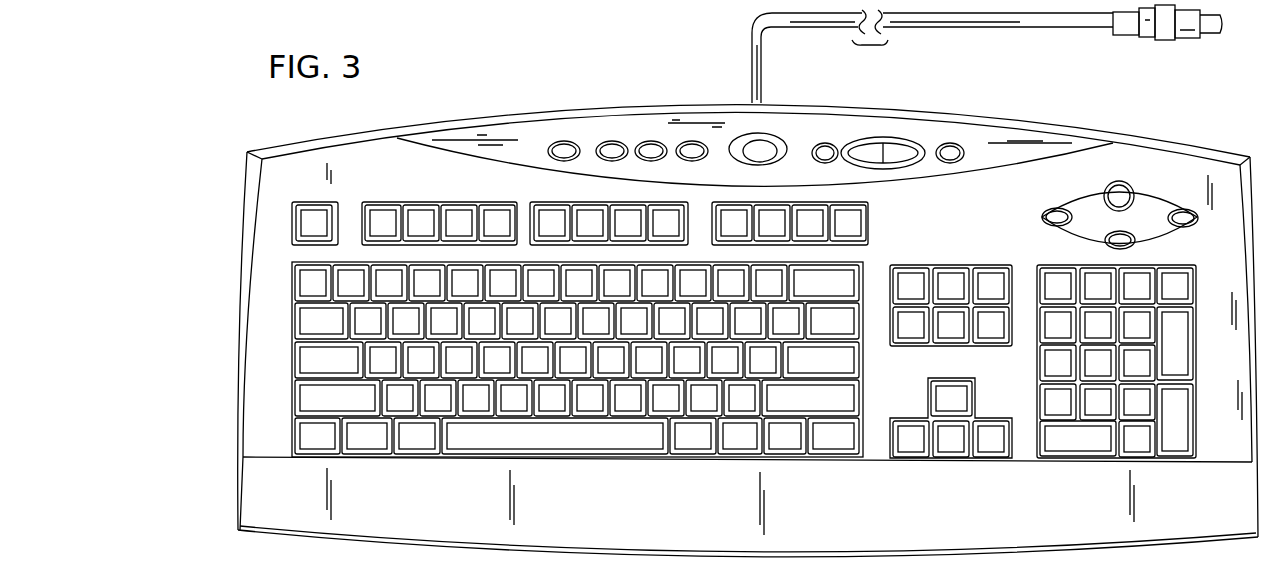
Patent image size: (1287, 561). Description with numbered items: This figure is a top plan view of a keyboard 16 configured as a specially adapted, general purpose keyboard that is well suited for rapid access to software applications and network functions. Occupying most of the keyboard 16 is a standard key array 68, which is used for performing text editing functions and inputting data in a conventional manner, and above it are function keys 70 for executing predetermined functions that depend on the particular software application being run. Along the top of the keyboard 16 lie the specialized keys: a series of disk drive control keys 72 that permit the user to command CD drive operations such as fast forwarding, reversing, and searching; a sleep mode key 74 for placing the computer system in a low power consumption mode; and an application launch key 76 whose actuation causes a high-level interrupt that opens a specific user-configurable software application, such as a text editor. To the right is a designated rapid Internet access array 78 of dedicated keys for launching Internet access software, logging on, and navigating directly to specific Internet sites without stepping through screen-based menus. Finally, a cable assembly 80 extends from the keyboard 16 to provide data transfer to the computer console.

The keyboard 16 is at (238, 492).
The standard key array 68 is at (282, 319).
The function keys 70 is at (553, 200).
The disk drive control keys 72 is at (692, 146).
The sleep mode key 74 is at (752, 147).
The application launch key 76 is at (950, 148).
The rapid Internet access array 78 is at (1145, 190).
The cable assembly 80 is at (1033, 28).